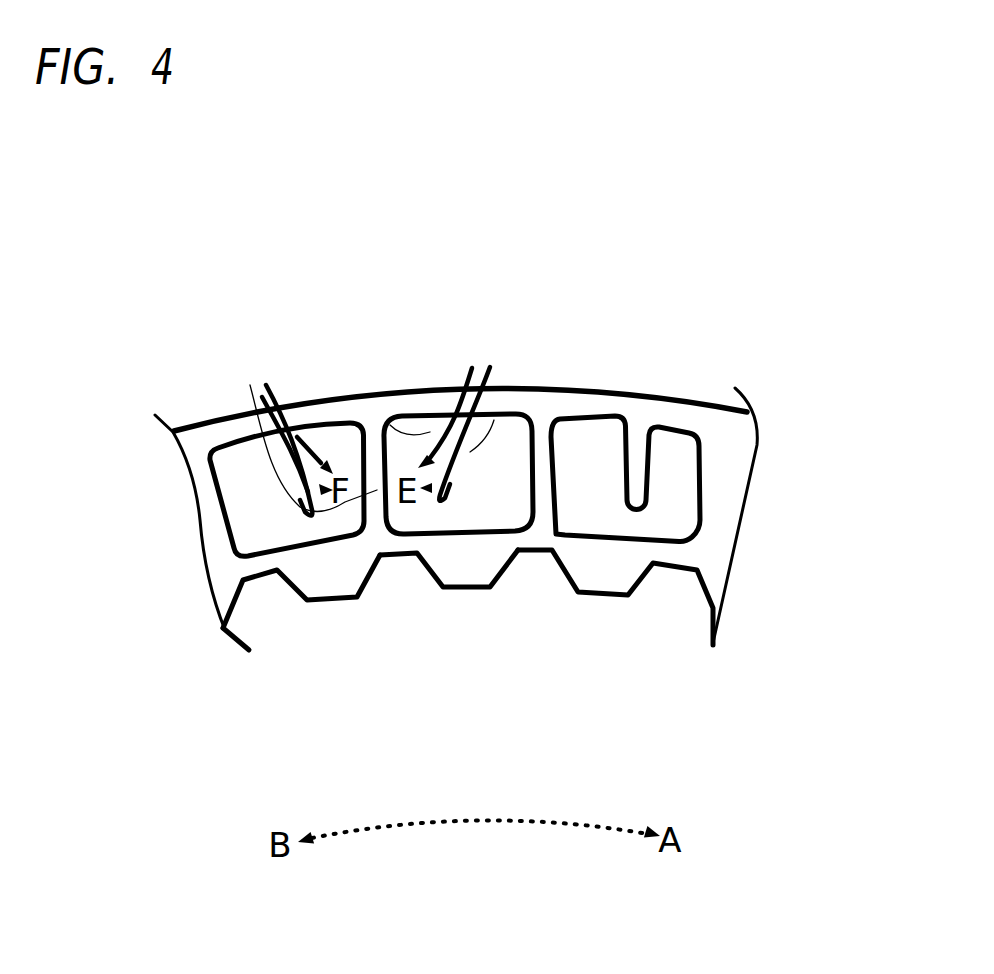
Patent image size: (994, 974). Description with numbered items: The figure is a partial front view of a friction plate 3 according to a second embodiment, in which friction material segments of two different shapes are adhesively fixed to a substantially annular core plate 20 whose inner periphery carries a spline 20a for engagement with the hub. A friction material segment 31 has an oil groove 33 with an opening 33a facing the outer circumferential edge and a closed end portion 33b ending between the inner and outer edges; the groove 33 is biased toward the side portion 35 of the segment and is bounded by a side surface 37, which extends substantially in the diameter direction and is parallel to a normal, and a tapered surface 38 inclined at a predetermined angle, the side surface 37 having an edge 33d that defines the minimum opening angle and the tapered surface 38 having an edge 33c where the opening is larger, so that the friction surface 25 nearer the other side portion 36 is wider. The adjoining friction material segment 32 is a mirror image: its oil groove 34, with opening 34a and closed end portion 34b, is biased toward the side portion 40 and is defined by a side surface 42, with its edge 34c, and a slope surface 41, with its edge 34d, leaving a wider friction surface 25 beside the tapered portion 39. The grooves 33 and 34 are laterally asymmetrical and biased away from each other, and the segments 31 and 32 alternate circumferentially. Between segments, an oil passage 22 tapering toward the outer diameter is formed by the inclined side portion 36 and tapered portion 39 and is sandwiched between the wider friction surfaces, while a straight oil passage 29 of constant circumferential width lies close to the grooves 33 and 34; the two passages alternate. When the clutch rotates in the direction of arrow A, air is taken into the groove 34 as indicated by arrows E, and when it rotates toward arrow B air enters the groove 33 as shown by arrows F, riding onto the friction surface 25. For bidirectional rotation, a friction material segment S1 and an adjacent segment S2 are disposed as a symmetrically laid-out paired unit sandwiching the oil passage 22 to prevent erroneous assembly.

The friction plate 3 is at (634, 238).
The core plate 20 is at (432, 395).
The spline 20a is at (250, 648).
The oil passage 22 is at (538, 522).
The friction surface 25 is at (274, 525).
The oil passage 29 is at (380, 522).
The friction material segment 31 is at (236, 524).
The friction material segment 32 is at (473, 517).
The oil groove 33 is at (643, 496).
The opening 33a is at (641, 425).
The closed end portion 33b is at (617, 500).
The edge 33c is at (623, 416).
The edge 33d is at (650, 426).
The oil groove 34 is at (447, 483).
The opening 34a is at (430, 420).
The closed end portion 34b is at (417, 520).
The edge 34c is at (462, 412).
The edge 34d is at (433, 417).
The side portion 35 is at (750, 488).
The side portion 36 is at (553, 470).
The side surface 37 is at (653, 468).
The tapered surface 38 is at (607, 505).
The tapered portion 39 is at (530, 500).
The side portion 40 is at (267, 407).
The slope surface 41 is at (475, 450).
The side surface 42 is at (408, 405).
The friction material segment S1 is at (503, 403).
The friction material segment S2 is at (690, 545).